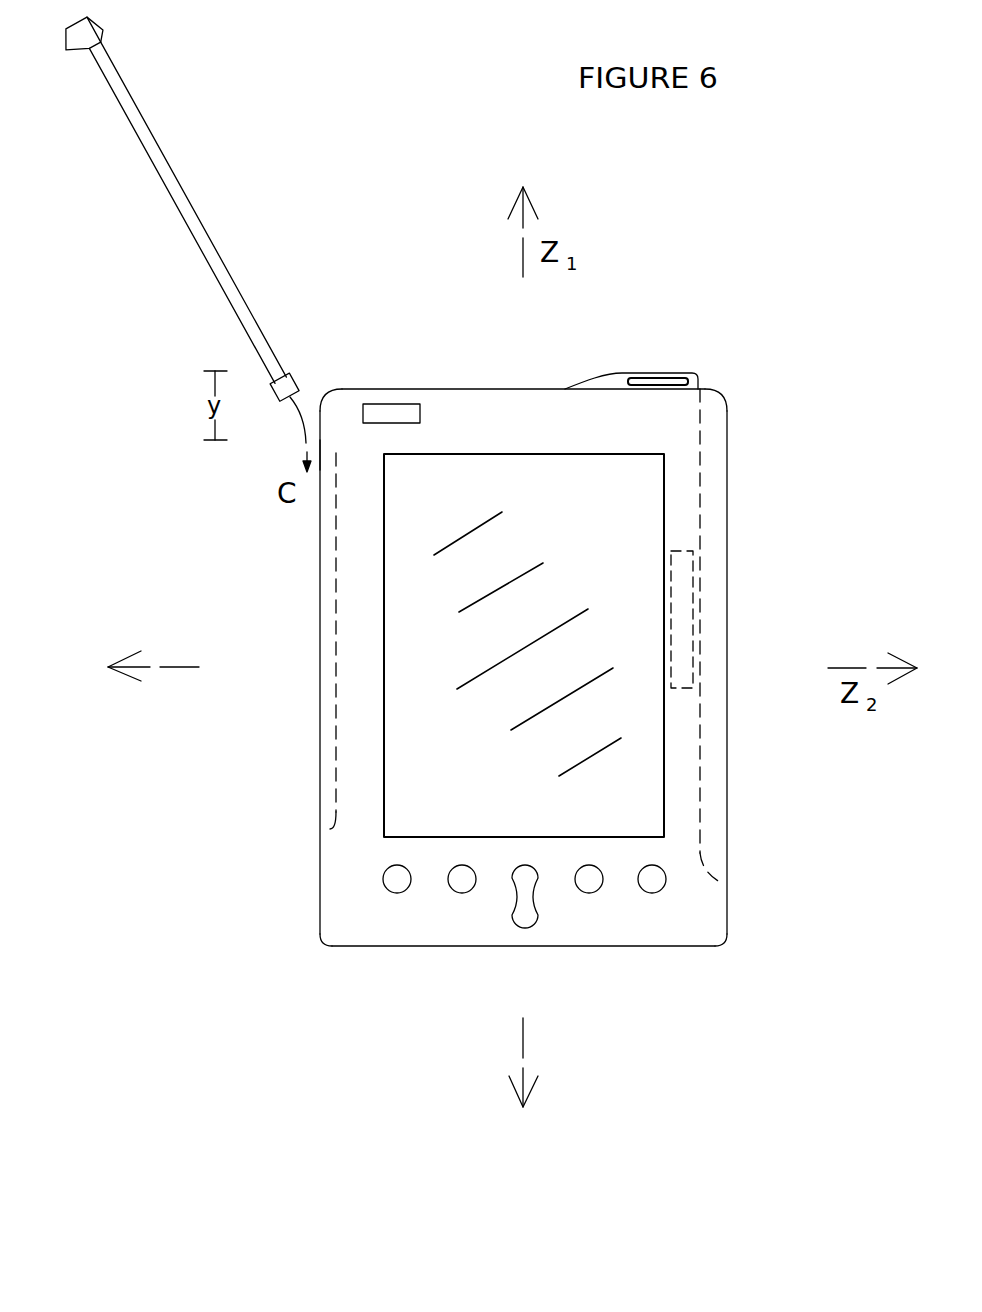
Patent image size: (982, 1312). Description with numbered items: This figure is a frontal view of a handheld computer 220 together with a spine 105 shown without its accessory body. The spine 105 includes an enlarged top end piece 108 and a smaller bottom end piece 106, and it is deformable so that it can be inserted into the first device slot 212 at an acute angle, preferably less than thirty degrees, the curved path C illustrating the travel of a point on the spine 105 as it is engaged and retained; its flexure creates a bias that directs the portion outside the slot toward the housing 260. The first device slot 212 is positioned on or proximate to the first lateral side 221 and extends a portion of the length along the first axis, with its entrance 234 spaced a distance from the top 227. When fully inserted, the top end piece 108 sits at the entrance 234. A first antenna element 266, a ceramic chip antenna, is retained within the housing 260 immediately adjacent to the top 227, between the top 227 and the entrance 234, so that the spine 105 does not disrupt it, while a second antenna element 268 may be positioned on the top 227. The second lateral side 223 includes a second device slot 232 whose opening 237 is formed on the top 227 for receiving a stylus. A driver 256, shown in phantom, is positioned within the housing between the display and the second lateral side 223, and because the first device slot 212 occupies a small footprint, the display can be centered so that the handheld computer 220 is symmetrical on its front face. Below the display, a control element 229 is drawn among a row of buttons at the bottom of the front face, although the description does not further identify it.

The spine 105 is at (220, 207).
The top end piece 108 is at (88, 28).
The bottom end piece 106 is at (300, 383).
The handheld computer 220 is at (472, 732).
The top 227 is at (515, 388).
The opening 237 is at (718, 395).
The second device slot 232 is at (722, 478).
The second lateral side 223 is at (728, 895).
The housing 260 is at (356, 958).
The first lateral side 221 is at (310, 880).
The rocker switch 229 is at (525, 938).
The first antenna element 266 is at (392, 413).
The second antenna element 268 is at (632, 372).
The first device slot 212 is at (330, 829).
The entrance 234 is at (308, 447).
The driver 256 is at (682, 619).